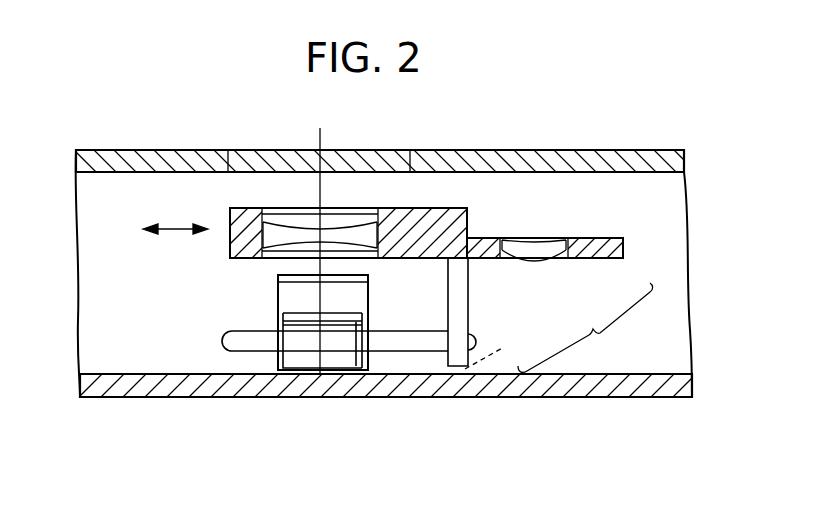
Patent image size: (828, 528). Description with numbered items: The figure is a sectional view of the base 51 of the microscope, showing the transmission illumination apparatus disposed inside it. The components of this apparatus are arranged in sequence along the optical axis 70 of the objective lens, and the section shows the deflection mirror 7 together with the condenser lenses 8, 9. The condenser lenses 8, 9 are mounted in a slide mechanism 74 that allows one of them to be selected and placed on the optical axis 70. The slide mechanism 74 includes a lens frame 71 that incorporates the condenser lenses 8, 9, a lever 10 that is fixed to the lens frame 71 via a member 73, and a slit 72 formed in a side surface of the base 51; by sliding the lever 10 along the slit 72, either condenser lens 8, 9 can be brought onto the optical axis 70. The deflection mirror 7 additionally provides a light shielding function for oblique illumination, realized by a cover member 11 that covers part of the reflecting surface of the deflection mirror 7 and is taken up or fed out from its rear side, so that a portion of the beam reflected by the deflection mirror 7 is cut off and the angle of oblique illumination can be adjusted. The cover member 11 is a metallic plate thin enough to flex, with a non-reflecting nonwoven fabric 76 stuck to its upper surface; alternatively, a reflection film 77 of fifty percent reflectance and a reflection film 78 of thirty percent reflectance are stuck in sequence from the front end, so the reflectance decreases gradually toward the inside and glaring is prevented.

The base 51 is at (626, 150).
The optical axis 70 is at (328, 138).
The condenser lens 8 is at (346, 258).
The condenser lens 9 is at (529, 247).
The lens frame 71 is at (596, 261).
The member 73 is at (458, 293).
The slit 72 is at (481, 341).
The lever 10 is at (499, 351).
The slide mechanism 74 is at (585, 327).
The deflection mirror 7 is at (278, 302).
The nonwoven fabric 76 is at (282, 372).
The reflection film 77 is at (366, 372).
The reflection film 78 is at (322, 385).
The cover member 11 is at (309, 409).